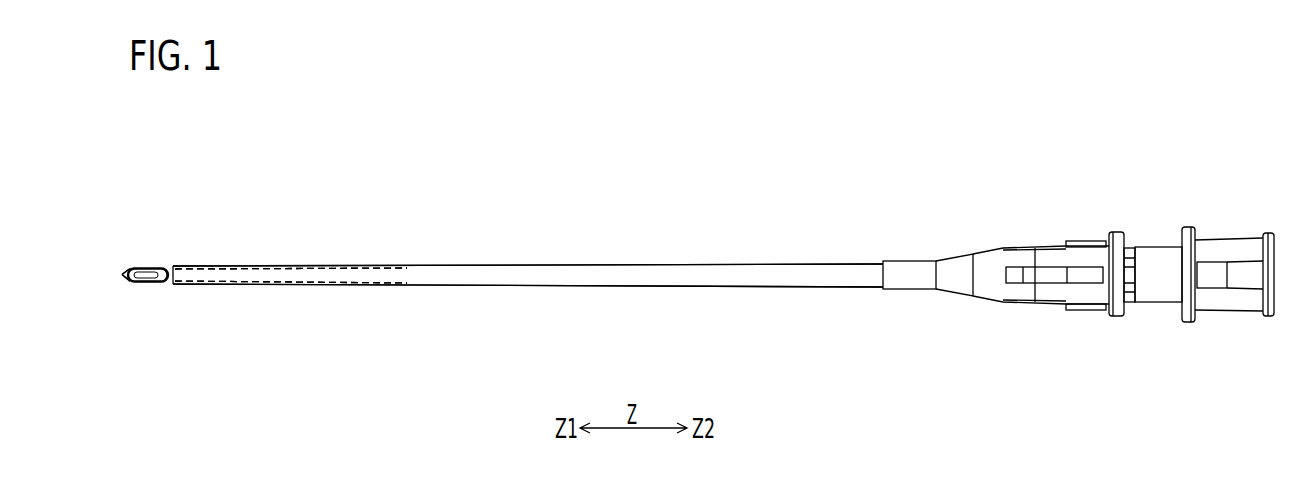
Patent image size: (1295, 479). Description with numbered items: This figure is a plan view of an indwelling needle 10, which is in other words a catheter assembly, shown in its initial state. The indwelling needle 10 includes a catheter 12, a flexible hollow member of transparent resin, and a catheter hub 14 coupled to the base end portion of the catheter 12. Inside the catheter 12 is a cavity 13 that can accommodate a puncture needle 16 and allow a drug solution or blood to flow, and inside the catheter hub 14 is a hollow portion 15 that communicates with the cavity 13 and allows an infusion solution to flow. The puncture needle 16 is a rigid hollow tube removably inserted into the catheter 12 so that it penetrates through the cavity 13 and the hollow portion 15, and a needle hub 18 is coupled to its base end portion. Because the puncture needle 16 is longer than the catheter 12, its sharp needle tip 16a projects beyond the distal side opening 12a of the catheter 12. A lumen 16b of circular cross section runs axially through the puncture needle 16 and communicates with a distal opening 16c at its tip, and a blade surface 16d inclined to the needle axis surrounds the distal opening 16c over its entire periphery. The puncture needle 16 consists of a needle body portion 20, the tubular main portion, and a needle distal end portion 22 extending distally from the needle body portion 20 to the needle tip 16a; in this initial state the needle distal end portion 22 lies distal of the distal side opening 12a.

The indwelling needle 10 is at (408, 136).
The catheter 12 is at (438, 264).
The distal side opening 12a is at (163, 271).
The cavity 13 is at (557, 278).
The catheter hub 14 is at (983, 260).
The hollow portion 15 is at (1086, 278).
The puncture needle 16 is at (168, 283).
The needle tip 16a is at (126, 273).
The lumen 16b is at (370, 284).
The distal opening 16c is at (147, 280).
The blade surface 16d is at (128, 275).
The needle hub 18 is at (1152, 303).
The needle body portion 20 is at (259, 283).
The needle distal end portion 22 is at (136, 282).